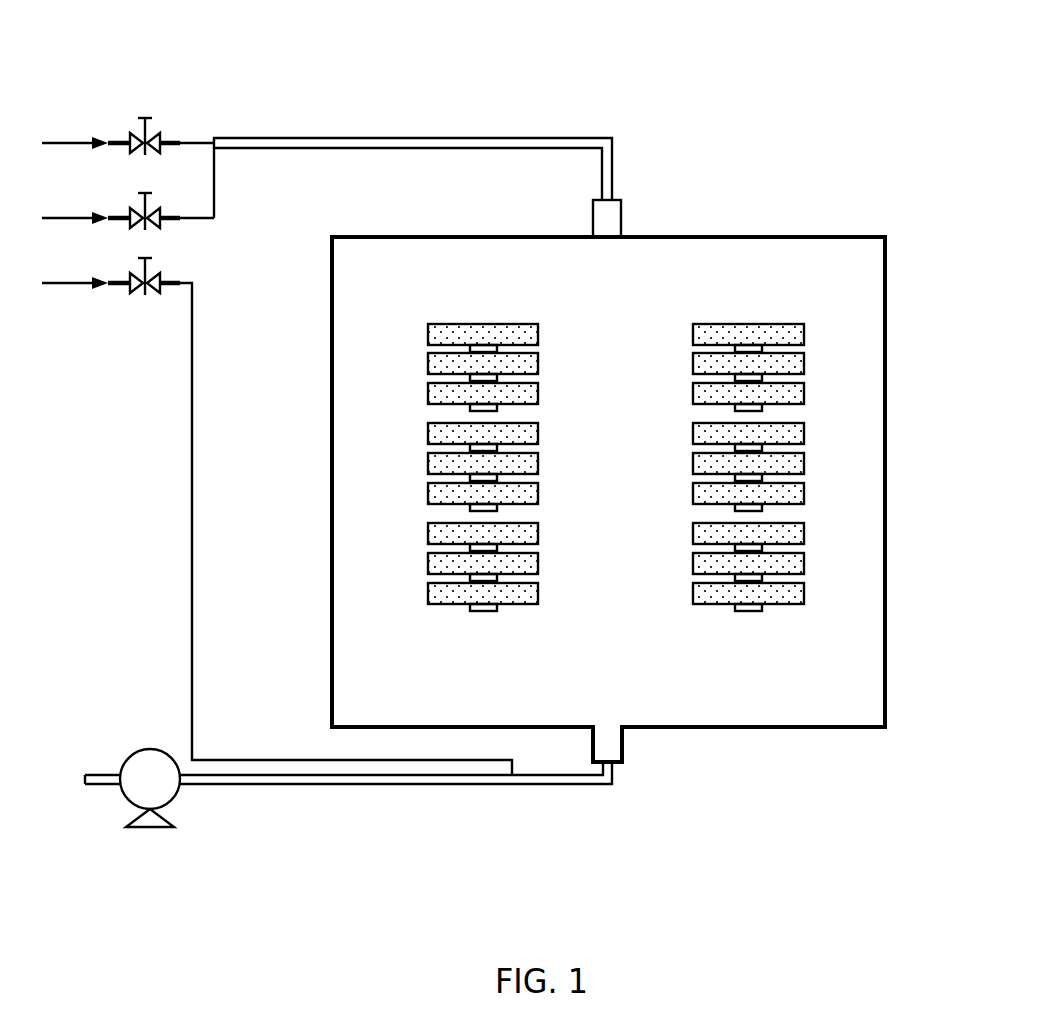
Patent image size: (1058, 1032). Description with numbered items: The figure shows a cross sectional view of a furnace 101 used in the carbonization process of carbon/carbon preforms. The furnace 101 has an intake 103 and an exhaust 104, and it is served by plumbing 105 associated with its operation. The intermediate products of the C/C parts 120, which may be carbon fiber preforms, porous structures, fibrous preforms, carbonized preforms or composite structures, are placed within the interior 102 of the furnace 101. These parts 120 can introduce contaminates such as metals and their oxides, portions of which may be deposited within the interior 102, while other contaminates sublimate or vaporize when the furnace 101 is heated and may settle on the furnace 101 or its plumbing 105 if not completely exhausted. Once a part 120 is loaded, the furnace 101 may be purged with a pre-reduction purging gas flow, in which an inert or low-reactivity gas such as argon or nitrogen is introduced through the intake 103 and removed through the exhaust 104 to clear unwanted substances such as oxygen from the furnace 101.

The furnace 101 is at (501, 459).
The interior of the furnace 102 is at (620, 307).
The intake 103 is at (590, 198).
The exhaust 104 is at (625, 760).
The plumbing 105 is at (237, 140).
The intermediate products of the C/C parts 120 is at (804, 323).